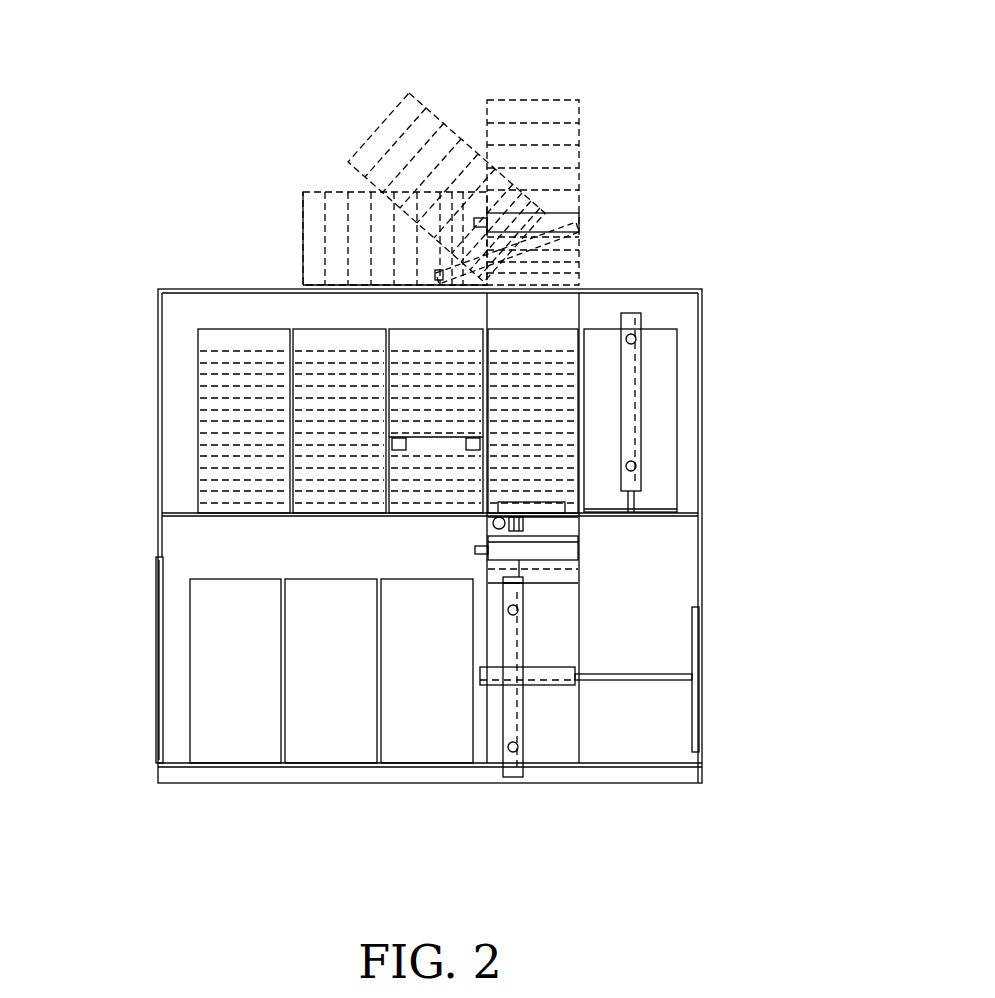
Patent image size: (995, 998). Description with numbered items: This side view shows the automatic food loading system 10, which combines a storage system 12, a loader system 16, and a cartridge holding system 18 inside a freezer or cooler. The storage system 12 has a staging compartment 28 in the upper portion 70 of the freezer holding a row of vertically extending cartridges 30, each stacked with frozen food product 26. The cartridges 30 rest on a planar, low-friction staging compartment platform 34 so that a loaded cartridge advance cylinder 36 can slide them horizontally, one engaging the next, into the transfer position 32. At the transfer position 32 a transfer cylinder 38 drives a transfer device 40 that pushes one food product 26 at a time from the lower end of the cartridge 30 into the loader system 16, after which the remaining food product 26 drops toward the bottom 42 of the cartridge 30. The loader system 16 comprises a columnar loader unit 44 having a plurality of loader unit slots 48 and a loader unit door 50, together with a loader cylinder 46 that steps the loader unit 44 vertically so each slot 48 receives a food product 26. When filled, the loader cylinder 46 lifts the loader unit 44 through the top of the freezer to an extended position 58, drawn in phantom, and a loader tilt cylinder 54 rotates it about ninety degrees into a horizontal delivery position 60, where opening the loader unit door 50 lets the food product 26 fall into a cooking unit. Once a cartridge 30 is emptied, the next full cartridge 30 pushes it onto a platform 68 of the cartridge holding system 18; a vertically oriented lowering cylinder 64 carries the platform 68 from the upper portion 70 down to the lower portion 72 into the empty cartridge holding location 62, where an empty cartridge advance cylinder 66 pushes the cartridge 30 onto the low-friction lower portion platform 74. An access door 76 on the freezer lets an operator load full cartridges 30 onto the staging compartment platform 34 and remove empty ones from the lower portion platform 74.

The food loading system 10 is at (248, 81).
The storage system 12 is at (168, 315).
The loader system 16 is at (388, 98).
The cartridge holding system 18 is at (753, 782).
The food product 26 is at (313, 430).
The staging compartment 28 is at (172, 368).
The cartridge 30 is at (410, 328).
The transfer position 32 is at (574, 522).
The staging compartment platform 34 is at (172, 513).
The loaded cartridge advance cylinder 36 is at (422, 447).
The transfer cylinder 38 is at (492, 523).
The transfer device 40 is at (545, 505).
The bottom of cartridge 42 is at (573, 512).
The loader unit 44 is at (302, 242).
The loader cylinder 46 is at (513, 718).
The loader unit slots 48 is at (335, 196).
The loader unit door 50 is at (317, 285).
The loader tilt cylinder 54 is at (560, 210).
The extended position 58 is at (589, 113).
The horizontal delivery position 60 is at (299, 189).
The empty cartridge holding location 62 is at (168, 578).
The lowering cylinder 64 is at (641, 360).
The empty cartridge advance cylinder 66 is at (556, 682).
The platform 68 is at (660, 512).
The upper portion 70 is at (599, 315).
The lower portion 72 is at (620, 737).
The lower portion platform 74 is at (178, 762).
The access door 76 is at (157, 628).